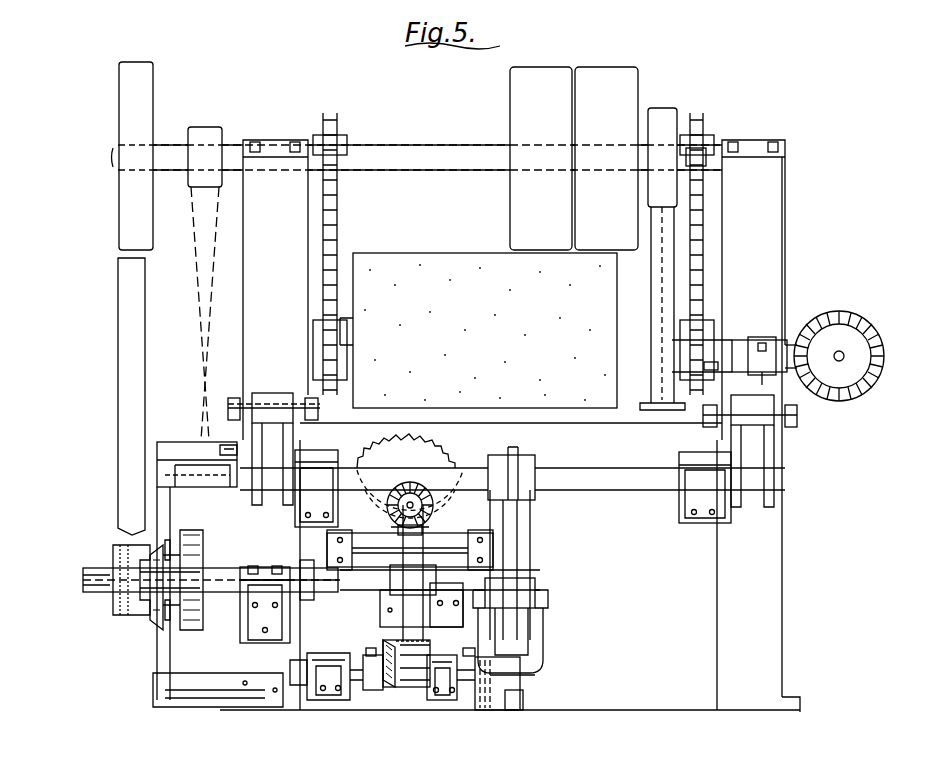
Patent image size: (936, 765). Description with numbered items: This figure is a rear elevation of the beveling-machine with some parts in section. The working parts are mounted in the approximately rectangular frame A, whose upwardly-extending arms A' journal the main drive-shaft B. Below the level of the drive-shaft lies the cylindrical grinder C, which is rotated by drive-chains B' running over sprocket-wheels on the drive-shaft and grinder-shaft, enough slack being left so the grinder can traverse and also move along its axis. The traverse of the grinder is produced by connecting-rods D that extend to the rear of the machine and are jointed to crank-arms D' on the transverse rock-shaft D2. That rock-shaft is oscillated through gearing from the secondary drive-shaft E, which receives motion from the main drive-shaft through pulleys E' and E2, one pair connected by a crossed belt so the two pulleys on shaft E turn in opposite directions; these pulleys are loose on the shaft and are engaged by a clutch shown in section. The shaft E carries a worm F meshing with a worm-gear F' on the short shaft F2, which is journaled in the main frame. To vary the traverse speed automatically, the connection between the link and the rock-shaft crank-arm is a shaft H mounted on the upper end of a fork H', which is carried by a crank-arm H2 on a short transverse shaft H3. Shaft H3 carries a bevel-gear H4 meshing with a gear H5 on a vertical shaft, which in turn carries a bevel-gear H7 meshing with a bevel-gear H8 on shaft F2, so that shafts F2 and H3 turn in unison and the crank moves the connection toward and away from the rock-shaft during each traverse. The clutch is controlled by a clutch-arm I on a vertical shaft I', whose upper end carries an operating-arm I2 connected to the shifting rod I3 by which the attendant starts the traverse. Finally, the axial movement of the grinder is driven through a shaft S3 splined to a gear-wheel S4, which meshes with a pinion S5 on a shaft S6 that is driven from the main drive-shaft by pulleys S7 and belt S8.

The frame A is at (510, 434).
The upwardly-extending arms A' is at (514, 290).
The main drive-shaft B is at (417, 159).
The drive-chains B' is at (532, 254).
The grinder C is at (478, 330).
The connecting-rods D is at (512, 442).
The crank-arms D' is at (555, 452).
The transverse rock-shaft D2 is at (512, 473).
The secondary drive-shaft E is at (311, 614).
The pulleys E' is at (239, 383).
The pulleys E2 is at (148, 97).
The worm F is at (410, 572).
The worm-gear F' is at (410, 476).
The short shaft F2 is at (412, 503).
The shaft H is at (524, 565).
The link or fork H' is at (521, 640).
The crank-arm H2 is at (488, 690).
The short transverse shaft H3 is at (410, 672).
The bevel-gear H4 is at (384, 652).
The bevel-gear H5 is at (447, 662).
The bevel-gear H7 is at (419, 525).
The bevel-gear H8 is at (417, 505).
The clutch-arm I is at (142, 580).
The vertical shaft I' is at (177, 482).
The operating-arm I2 is at (190, 440).
The shifting rod I3 is at (222, 436).
The shaft S3 is at (845, 360).
The gear-wheel S4 is at (880, 346).
The pinion S5 is at (800, 320).
The shaft S6 is at (712, 368).
The pulleys S7 is at (677, 110).
The belt S8 is at (660, 245).